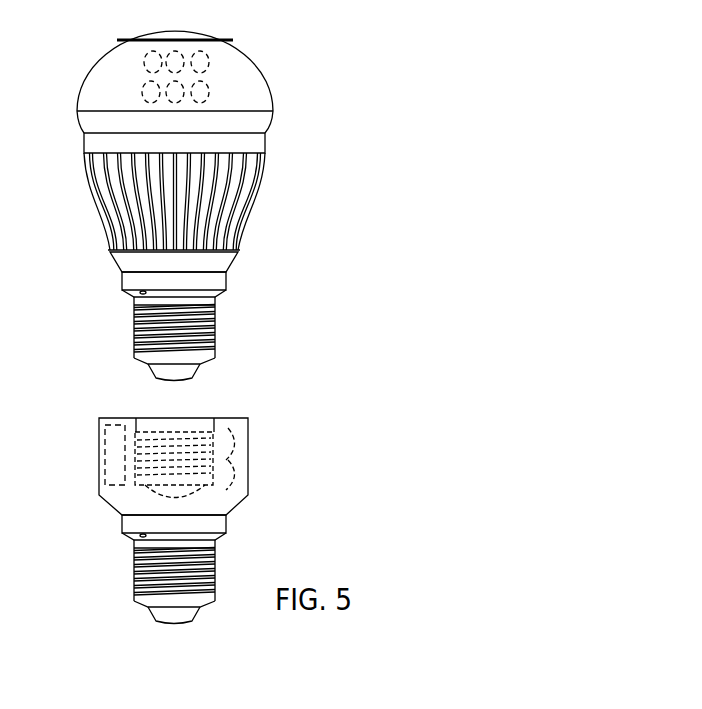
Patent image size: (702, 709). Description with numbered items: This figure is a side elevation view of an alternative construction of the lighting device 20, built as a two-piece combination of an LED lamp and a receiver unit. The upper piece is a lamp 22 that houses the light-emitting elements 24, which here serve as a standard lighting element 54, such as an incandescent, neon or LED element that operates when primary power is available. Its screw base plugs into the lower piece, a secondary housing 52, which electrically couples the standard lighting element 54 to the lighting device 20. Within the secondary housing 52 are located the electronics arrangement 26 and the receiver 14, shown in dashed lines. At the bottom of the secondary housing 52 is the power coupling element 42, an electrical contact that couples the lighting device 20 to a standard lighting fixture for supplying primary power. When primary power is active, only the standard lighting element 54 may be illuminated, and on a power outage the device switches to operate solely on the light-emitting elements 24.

The lamp 22 is at (253, 83).
The standard lighting element 54 is at (229, 202).
The electronics arrangement 26 is at (107, 473).
The receiver 14 is at (115, 455).
The light-emitting elements 24 is at (232, 470).
The lighting device 20 is at (214, 544).
The secondary housing 52 is at (220, 495).
The power coupling element 42 is at (170, 620).